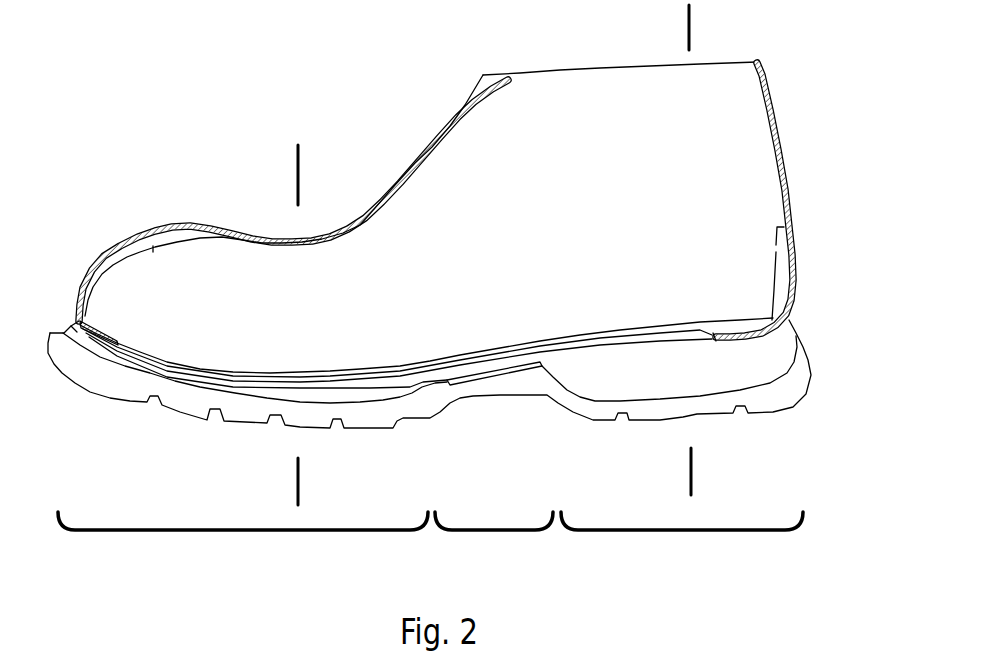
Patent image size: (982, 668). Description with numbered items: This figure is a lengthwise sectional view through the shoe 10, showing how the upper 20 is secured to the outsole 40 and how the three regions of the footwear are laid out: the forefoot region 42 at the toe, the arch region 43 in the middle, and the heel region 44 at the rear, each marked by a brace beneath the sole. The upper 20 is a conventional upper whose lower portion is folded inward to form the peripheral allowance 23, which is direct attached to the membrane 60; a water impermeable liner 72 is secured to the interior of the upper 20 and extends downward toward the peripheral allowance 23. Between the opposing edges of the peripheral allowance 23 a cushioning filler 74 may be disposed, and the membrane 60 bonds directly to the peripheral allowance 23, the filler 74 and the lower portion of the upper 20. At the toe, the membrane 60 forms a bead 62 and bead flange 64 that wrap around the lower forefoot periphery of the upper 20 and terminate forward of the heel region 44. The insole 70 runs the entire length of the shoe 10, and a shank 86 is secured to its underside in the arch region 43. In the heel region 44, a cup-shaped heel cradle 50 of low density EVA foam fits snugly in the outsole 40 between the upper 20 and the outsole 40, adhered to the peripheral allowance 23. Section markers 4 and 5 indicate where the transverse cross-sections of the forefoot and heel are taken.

The shoe 10 is at (427, 108).
The upper 20 is at (78, 316).
The peripheral allowance 23 is at (113, 343).
The outsole 40 is at (730, 413).
The forefoot region 42 is at (235, 532).
The arch region 43 is at (497, 532).
The heel region 44 is at (687, 532).
The heel cradle 50 is at (672, 382).
The membrane 60 is at (180, 378).
The bead 62 is at (66, 318).
The bead flange 64 is at (54, 329).
The insole 70 is at (218, 370).
The water impermeable liner 72 is at (96, 297).
The filler 74 is at (260, 383).
The shank 86 is at (507, 370).
The section line 4- 4 is at (308, 178).
The section line 5- 5 is at (684, 27).